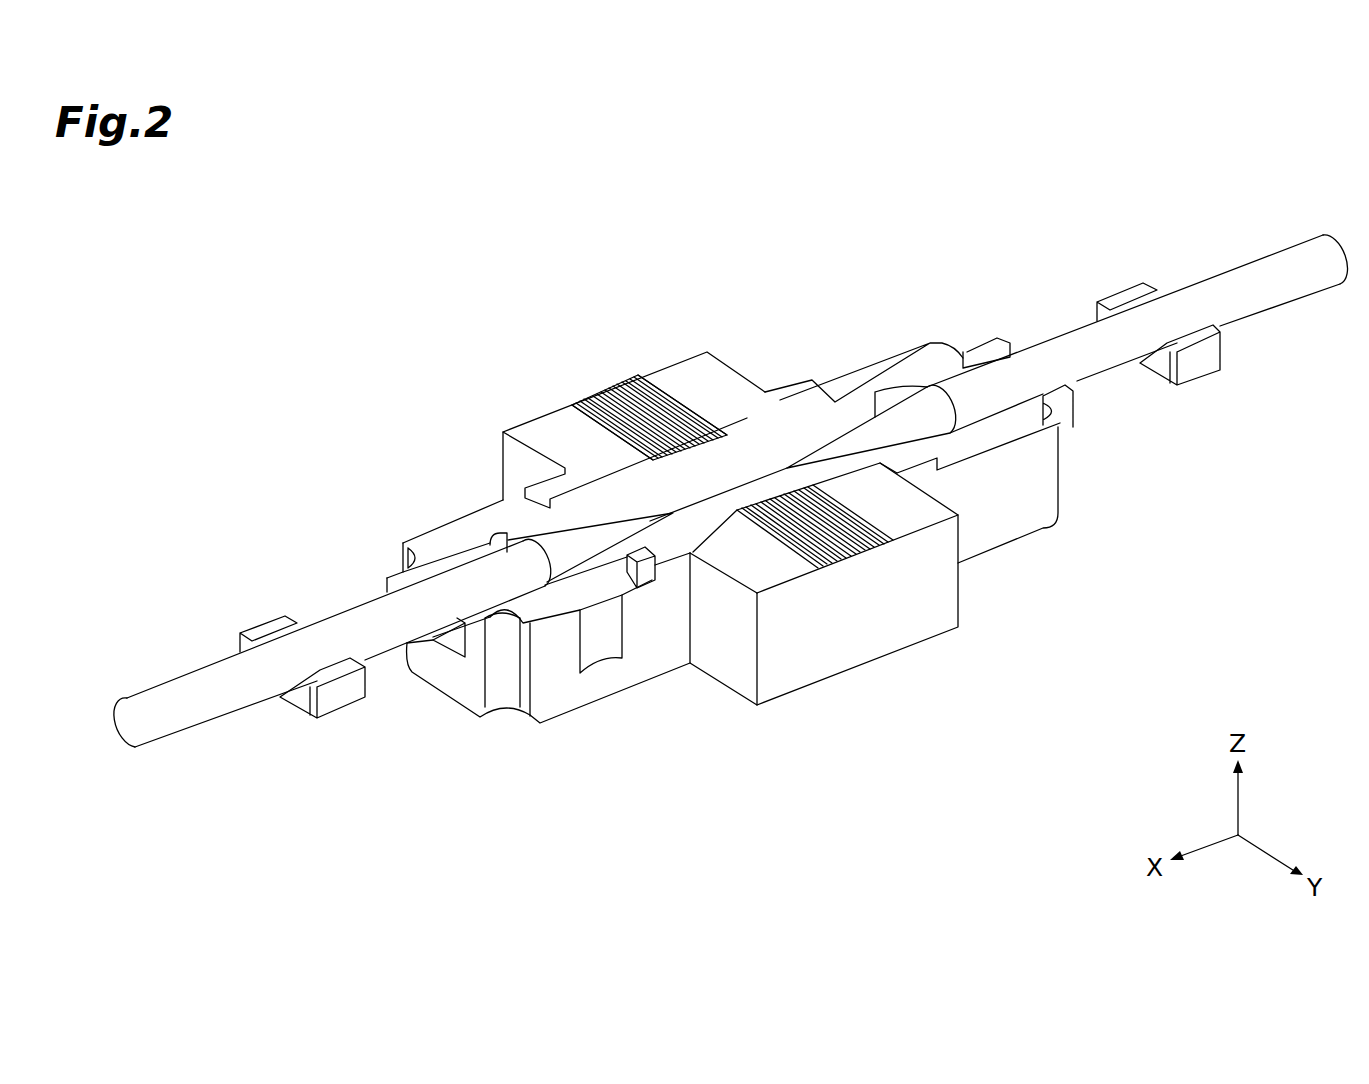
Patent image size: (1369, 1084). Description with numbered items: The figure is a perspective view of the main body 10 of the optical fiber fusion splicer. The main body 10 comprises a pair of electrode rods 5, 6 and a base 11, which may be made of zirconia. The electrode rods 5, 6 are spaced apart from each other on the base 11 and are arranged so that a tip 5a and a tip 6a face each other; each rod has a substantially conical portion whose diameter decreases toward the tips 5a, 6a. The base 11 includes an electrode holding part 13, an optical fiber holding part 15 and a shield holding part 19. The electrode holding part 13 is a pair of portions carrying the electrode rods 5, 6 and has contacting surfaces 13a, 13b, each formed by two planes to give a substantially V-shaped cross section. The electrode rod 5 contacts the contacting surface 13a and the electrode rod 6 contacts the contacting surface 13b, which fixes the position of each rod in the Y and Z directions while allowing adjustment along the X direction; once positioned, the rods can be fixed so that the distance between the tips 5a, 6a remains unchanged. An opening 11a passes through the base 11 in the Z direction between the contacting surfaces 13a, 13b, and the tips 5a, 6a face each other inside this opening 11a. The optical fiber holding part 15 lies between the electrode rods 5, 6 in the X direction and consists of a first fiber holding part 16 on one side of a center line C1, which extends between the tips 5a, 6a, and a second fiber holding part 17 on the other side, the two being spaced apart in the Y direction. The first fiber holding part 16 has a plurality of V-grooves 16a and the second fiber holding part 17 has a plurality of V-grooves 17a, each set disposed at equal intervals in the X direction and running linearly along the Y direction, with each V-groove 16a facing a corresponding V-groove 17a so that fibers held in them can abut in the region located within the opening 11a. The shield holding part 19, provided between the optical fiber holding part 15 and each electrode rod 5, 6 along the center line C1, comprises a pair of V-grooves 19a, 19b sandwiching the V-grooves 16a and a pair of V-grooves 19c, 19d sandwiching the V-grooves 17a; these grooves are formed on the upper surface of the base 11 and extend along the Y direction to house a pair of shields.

The electrode rod 5 is at (393, 647).
The tip 5a is at (673, 516).
The electrode rod 6 is at (1067, 351).
The tip 6a is at (789, 466).
The main body 10 is at (1053, 248).
The base 11 is at (730, 507).
The opening 11a is at (775, 447).
The electrode holding part 13 is at (723, 464).
The contacting surface 13a is at (442, 572).
The contacting surface 13b is at (967, 364).
The optical fiber holding part 15 is at (799, 522).
The first fiber holding part 16 is at (606, 389).
The V-grooves 16a is at (580, 398).
The second fiber holding part 17 is at (922, 618).
The V-grooves 17a is at (937, 497).
The shield holding part 19 is at (587, 365).
The V-groove 19a is at (570, 405).
The V-groove 19b is at (668, 358).
The V-groove 19c is at (826, 572).
The V-groove 19d is at (866, 566).
The center line C1 is at (718, 500).